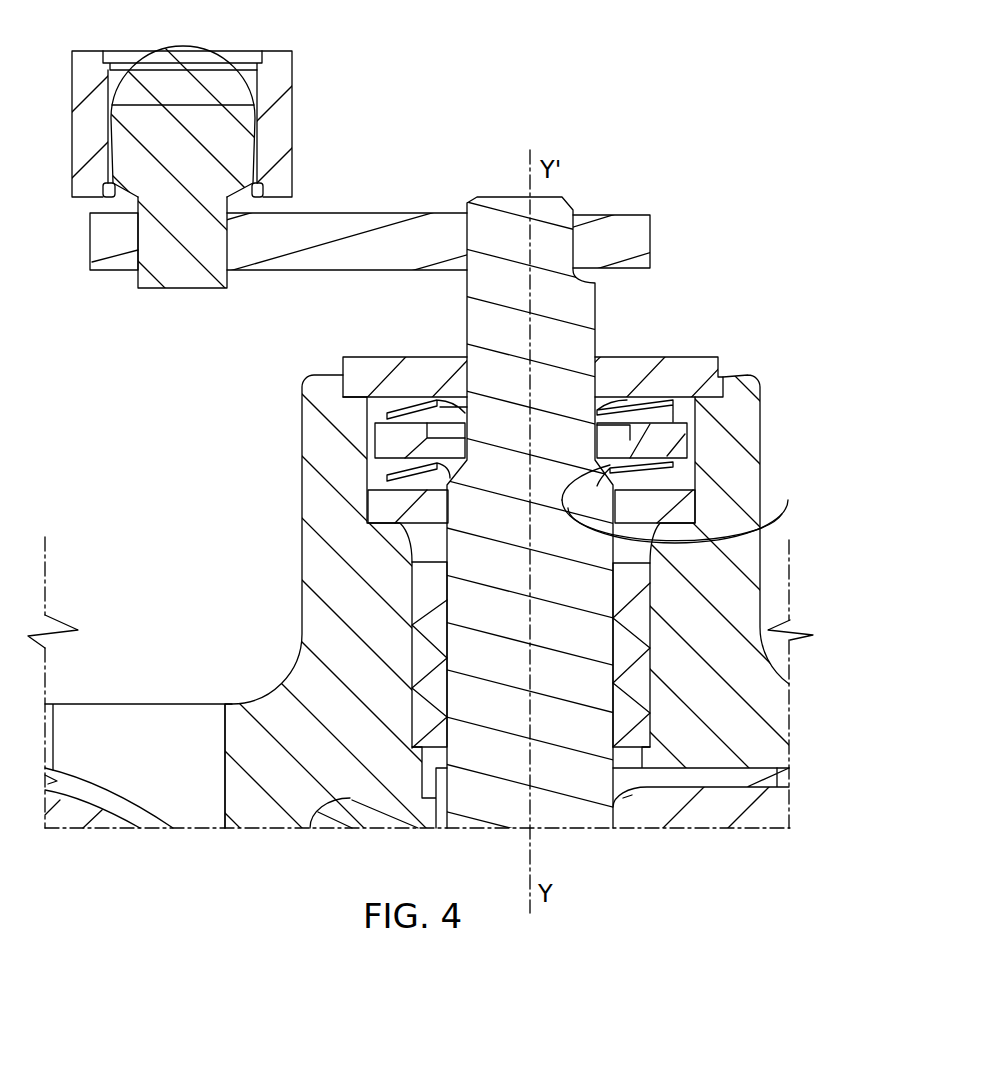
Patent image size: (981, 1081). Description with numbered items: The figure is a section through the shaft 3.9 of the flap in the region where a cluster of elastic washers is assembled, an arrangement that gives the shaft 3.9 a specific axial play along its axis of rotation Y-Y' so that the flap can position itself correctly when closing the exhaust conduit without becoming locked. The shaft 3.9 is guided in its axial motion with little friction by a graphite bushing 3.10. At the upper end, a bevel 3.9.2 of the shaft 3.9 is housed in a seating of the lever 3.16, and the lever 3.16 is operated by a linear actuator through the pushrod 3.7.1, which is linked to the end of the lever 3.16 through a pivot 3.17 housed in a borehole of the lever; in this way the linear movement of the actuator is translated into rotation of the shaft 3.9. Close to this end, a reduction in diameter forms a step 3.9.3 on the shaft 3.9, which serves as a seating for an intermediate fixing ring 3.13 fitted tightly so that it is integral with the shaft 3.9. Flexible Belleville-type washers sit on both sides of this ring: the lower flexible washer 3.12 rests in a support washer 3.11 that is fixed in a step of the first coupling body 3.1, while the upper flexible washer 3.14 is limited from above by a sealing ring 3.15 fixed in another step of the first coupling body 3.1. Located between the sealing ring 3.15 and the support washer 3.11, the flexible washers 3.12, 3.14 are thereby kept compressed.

The first coupling body 3.1 is at (268, 700).
The pushrod 3.7.1 is at (292, 102).
The shaft 3.9 is at (597, 305).
The bevel 3.9.2 is at (575, 210).
The step 3.9.3 is at (788, 500).
The graphite bushing 3.10 is at (428, 643).
The support washer 3.11 is at (385, 508).
The lower flexible washer 3.12 is at (385, 470).
The intermediate fixing ring 3.13 is at (375, 440).
The upper flexible washer 3.14 is at (390, 410).
The sealing ring 3.15 is at (680, 358).
The lever 3.16 is at (360, 213).
The pivot 3.17 is at (168, 288).